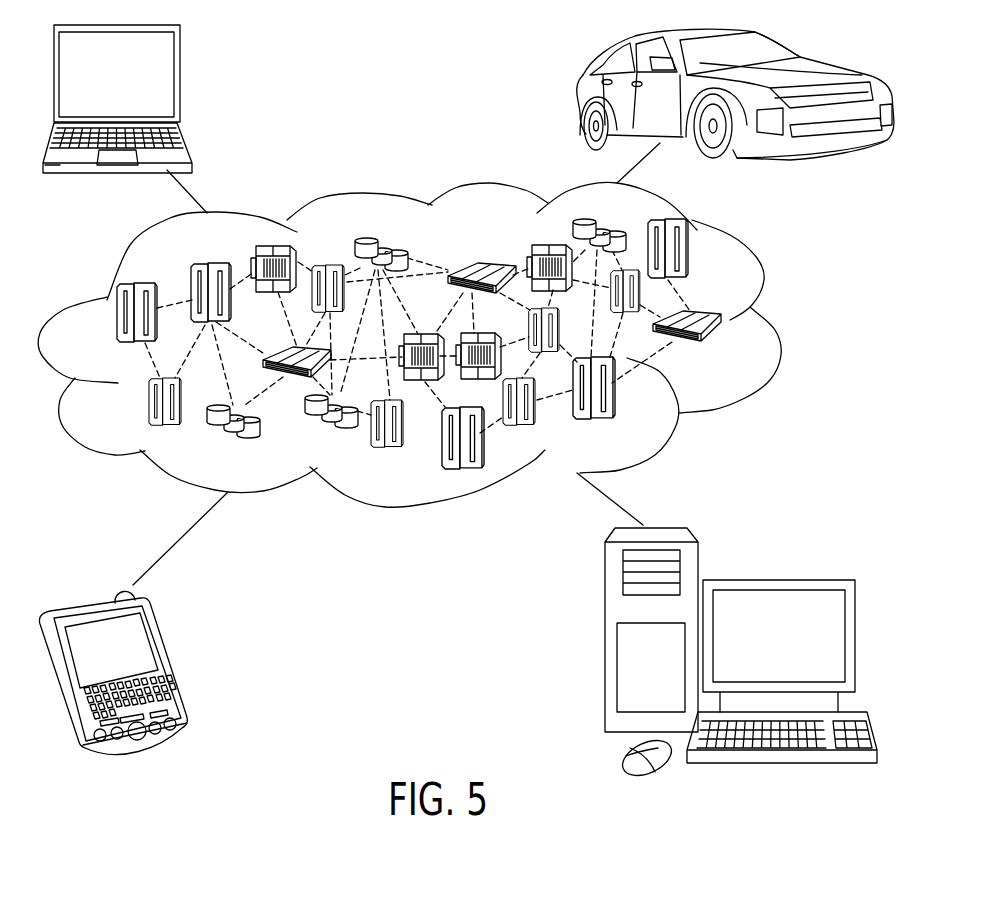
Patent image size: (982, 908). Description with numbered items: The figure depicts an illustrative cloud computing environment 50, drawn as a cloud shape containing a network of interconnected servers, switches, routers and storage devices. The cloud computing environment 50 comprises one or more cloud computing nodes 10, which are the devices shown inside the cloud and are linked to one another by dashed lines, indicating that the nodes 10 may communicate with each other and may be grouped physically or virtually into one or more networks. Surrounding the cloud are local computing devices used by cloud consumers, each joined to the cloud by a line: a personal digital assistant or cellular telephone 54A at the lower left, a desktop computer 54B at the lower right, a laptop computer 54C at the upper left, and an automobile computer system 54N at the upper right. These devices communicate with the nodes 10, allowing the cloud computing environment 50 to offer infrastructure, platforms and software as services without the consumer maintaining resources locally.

The cloud computing node 10 is at (723, 352).
The cloud computing environment 50 is at (777, 323).
The personal digital assistant or cellular telephone 54A is at (170, 662).
The desktop computer 54B is at (775, 580).
The laptop computer 54C is at (178, 83).
The automobile computer system 54N is at (580, 97).